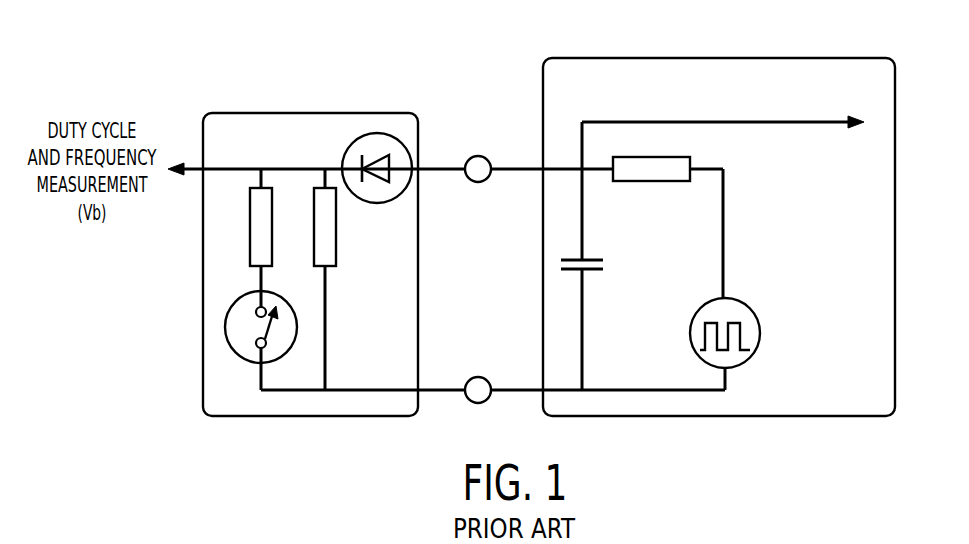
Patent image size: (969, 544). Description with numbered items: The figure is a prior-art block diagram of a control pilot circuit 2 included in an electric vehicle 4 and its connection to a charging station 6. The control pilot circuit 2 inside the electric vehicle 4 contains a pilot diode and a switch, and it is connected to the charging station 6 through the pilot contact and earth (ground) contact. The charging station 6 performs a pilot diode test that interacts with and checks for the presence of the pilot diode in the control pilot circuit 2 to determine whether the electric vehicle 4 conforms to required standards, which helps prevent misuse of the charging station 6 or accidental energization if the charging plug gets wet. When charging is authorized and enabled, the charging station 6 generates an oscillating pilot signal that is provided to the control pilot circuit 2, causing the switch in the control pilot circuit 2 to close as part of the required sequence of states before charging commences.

The control pilot circuit 2 is at (365, 353).
The electric vehicle 4 is at (310, 113).
The charging station 6 is at (718, 58).